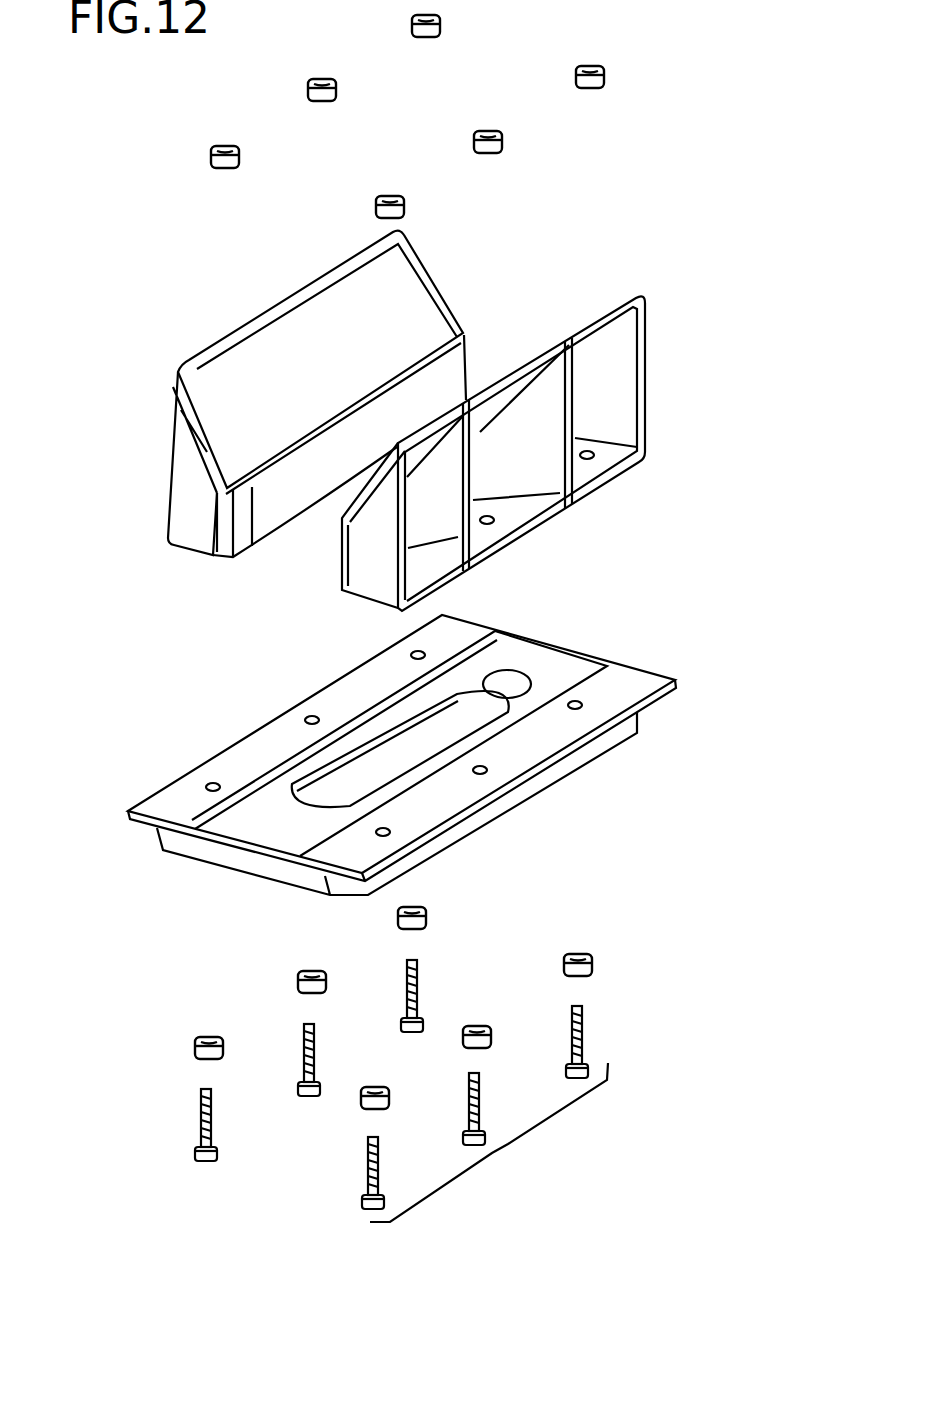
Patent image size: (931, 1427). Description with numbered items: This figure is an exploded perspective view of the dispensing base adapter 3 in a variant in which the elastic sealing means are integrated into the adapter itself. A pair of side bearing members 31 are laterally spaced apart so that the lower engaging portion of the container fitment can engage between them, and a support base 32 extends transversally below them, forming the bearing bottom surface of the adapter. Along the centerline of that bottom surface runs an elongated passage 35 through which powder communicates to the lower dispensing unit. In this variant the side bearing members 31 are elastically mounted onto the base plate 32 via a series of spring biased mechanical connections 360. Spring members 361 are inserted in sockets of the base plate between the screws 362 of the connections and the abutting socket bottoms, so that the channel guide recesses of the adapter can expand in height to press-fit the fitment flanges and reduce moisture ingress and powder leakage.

The dispensing base adapter 3 is at (110, 358).
The side bearing members 31 is at (452, 276).
The support base 32 is at (206, 882).
The elongated passage 35 is at (470, 713).
The spring biased mechanical connections 360 is at (434, 1091).
The spring members 361 is at (422, 914).
The screws 362 is at (592, 1022).